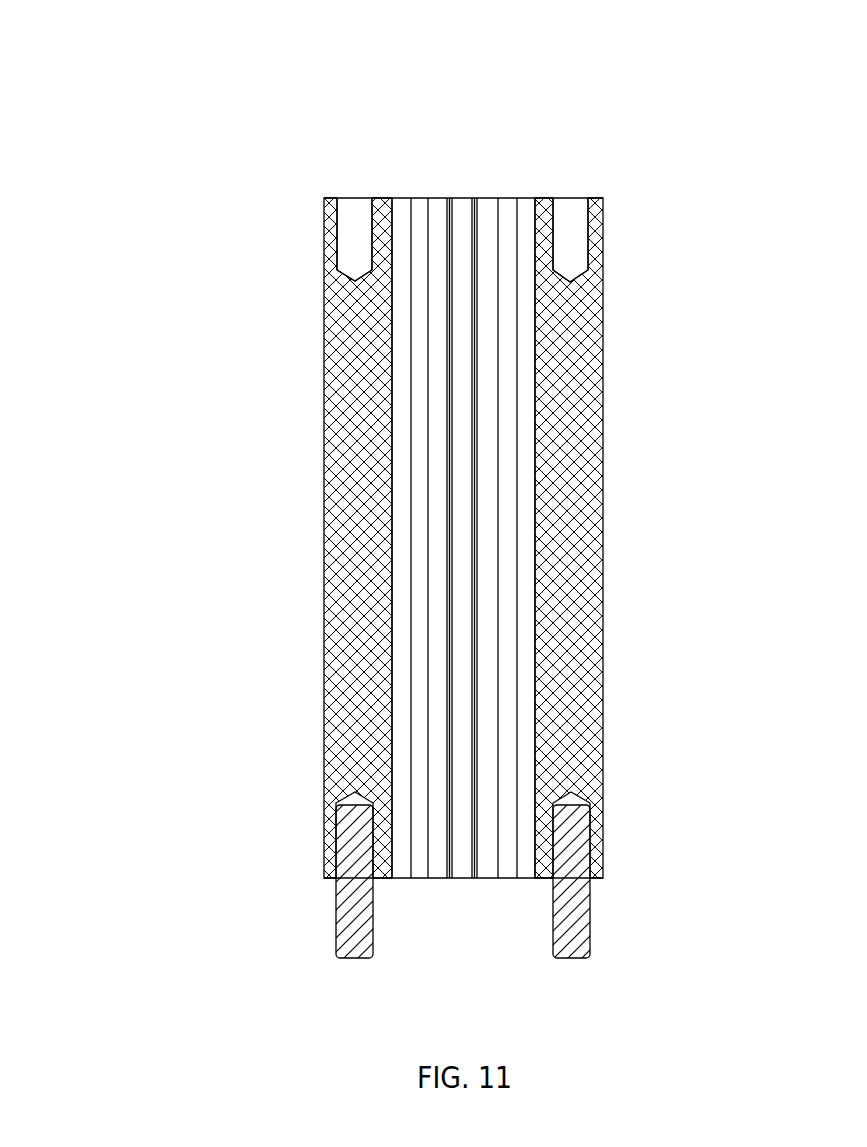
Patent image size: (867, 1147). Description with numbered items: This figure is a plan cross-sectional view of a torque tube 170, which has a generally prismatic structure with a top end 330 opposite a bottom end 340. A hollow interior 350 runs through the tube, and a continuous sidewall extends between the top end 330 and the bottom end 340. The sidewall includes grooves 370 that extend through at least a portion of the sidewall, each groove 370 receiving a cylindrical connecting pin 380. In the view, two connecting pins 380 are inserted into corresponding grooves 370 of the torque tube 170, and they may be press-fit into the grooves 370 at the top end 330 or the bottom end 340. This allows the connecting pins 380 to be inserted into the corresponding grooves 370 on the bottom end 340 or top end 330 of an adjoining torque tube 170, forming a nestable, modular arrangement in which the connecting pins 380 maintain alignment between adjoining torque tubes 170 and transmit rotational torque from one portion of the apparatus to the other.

The torque tube 170 is at (155, 180).
The top end 330 is at (324, 198).
The bottom end 340 is at (327, 880).
The hollow interior 350 is at (462, 215).
The groove 370 is at (352, 215).
The connecting pin 380 is at (355, 923).